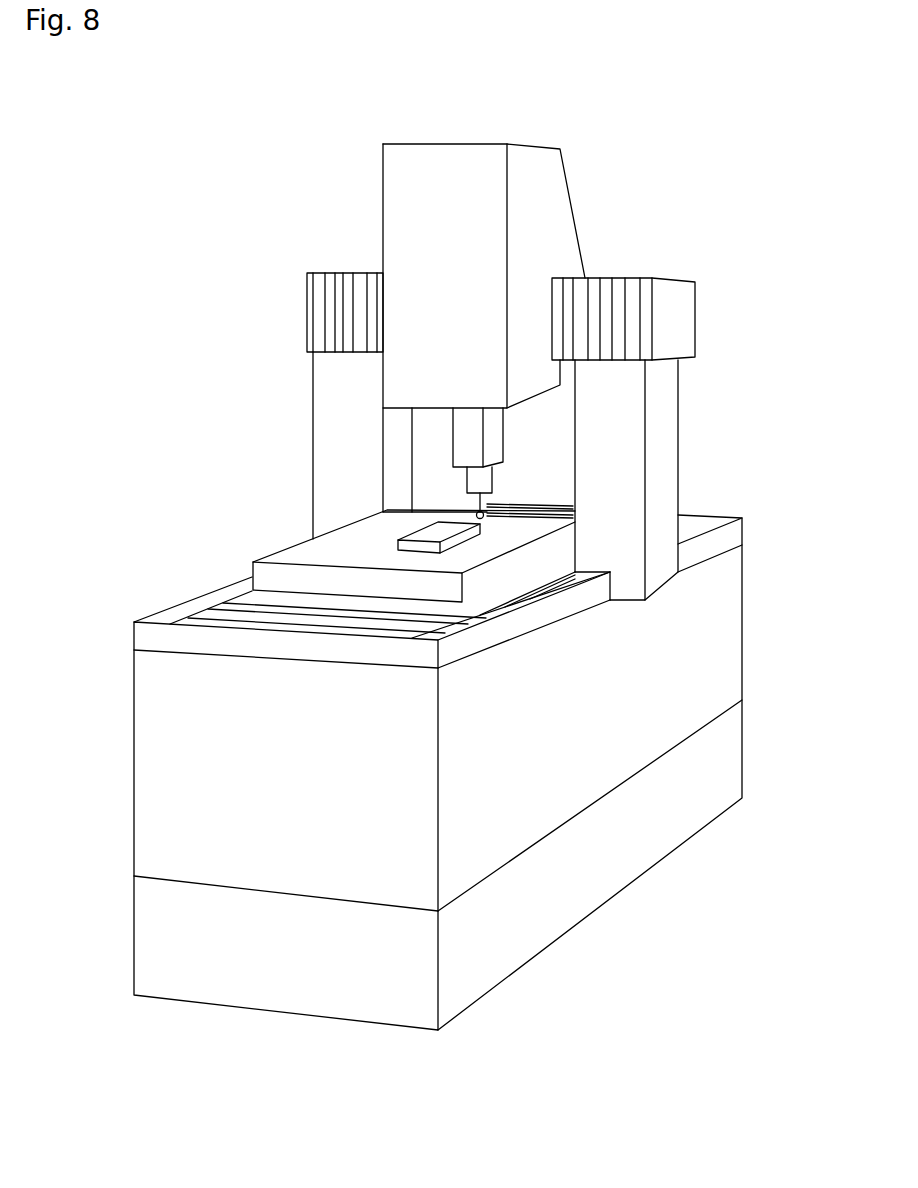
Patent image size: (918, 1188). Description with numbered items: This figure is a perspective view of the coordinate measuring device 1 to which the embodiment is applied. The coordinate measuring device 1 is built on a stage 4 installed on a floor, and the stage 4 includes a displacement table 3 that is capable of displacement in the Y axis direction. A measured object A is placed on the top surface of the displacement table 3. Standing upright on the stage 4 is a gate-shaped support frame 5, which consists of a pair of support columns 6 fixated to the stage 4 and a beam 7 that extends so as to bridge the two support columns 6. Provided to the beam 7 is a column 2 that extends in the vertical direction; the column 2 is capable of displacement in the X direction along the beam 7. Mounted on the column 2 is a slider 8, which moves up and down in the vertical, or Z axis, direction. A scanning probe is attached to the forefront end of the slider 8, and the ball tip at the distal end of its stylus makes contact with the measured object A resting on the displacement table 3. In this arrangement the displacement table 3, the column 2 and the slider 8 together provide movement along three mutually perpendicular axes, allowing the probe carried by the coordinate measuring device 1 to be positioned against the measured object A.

The coordinate measuring device 1 is at (250, 153).
The column 2 is at (560, 213).
The displacement table 3 is at (290, 557).
The stage 4 is at (733, 642).
The support frame 5 is at (288, 318).
The support columns 6 is at (327, 438).
The beam 7 is at (658, 277).
The slider 8 is at (493, 438).
The measured object A is at (398, 538).